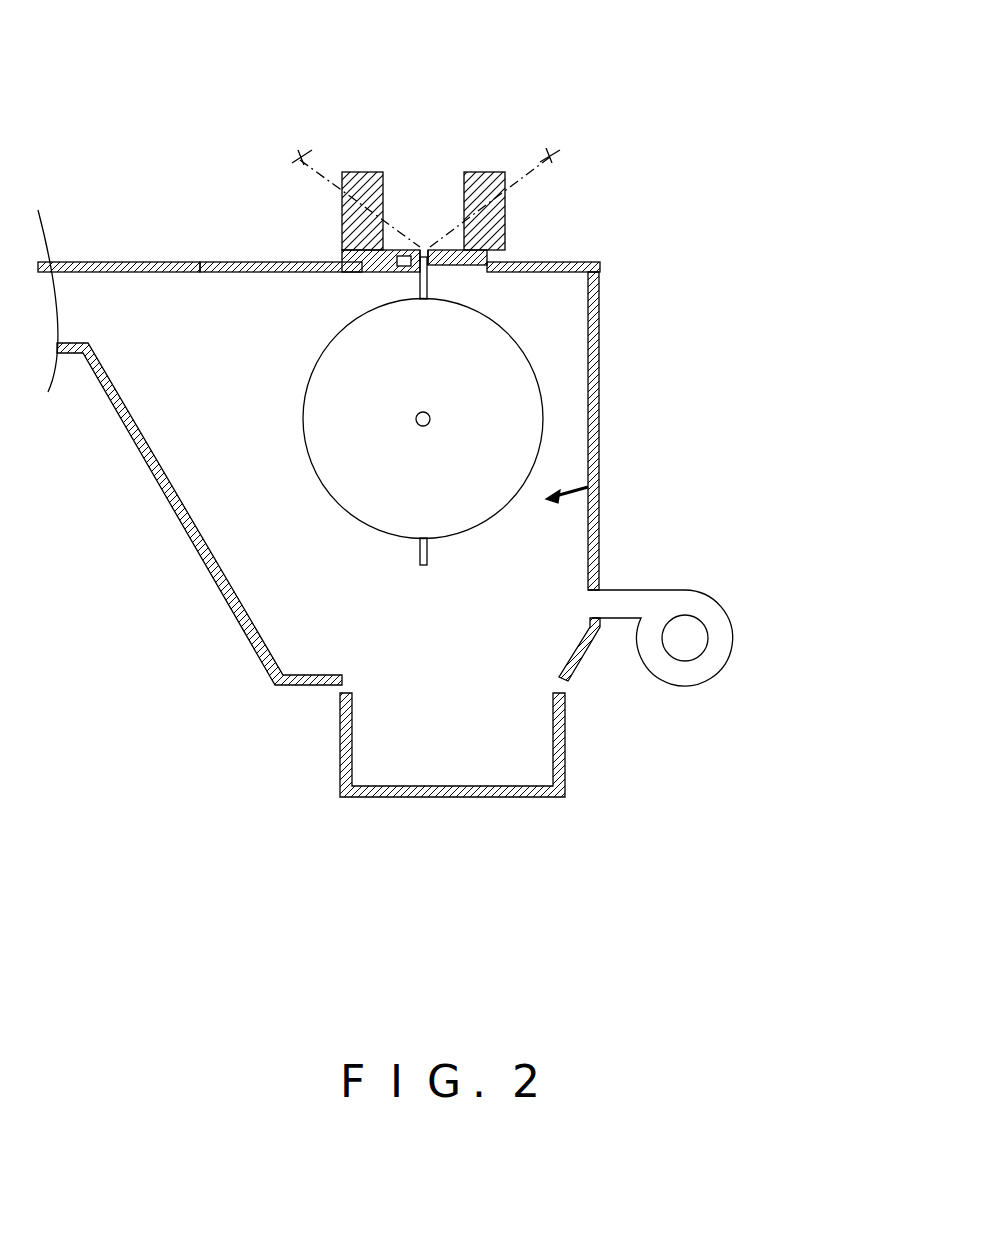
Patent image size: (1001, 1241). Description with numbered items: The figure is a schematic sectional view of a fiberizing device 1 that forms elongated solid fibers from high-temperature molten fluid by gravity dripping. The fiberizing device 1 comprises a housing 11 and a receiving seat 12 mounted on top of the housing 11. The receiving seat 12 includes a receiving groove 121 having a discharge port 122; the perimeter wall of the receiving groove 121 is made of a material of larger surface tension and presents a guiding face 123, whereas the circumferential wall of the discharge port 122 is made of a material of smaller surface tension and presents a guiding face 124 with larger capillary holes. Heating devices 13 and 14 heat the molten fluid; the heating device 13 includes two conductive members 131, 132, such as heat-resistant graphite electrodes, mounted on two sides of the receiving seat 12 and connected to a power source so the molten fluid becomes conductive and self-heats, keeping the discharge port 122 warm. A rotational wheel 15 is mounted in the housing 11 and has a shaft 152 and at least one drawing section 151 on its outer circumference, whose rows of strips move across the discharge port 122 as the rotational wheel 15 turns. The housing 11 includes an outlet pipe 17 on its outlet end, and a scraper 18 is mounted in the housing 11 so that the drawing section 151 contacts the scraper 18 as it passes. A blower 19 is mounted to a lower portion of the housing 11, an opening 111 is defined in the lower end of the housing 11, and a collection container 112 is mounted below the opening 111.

The fiberizing device 1 is at (207, 262).
The outlet pipe 17 is at (103, 262).
The housing 11 is at (598, 335).
The opening 111 is at (447, 678).
The collection container 112 is at (565, 745).
The receiving seat 12 is at (514, 210).
The receiving groove 121 is at (393, 185).
The discharge port 122 is at (503, 253).
The guiding face 123 is at (506, 227).
The guiding face 124 is at (600, 277).
The heating device 13 is at (542, 182).
The conductive member 131 is at (521, 172).
The conductive member 132 is at (332, 172).
The heating device 14 is at (427, 245).
The rotational wheel 15 is at (543, 400).
The drawing section 151 is at (427, 293).
The shaft 152 is at (430, 421).
The scraper 18 is at (600, 497).
The blower 19 is at (735, 650).